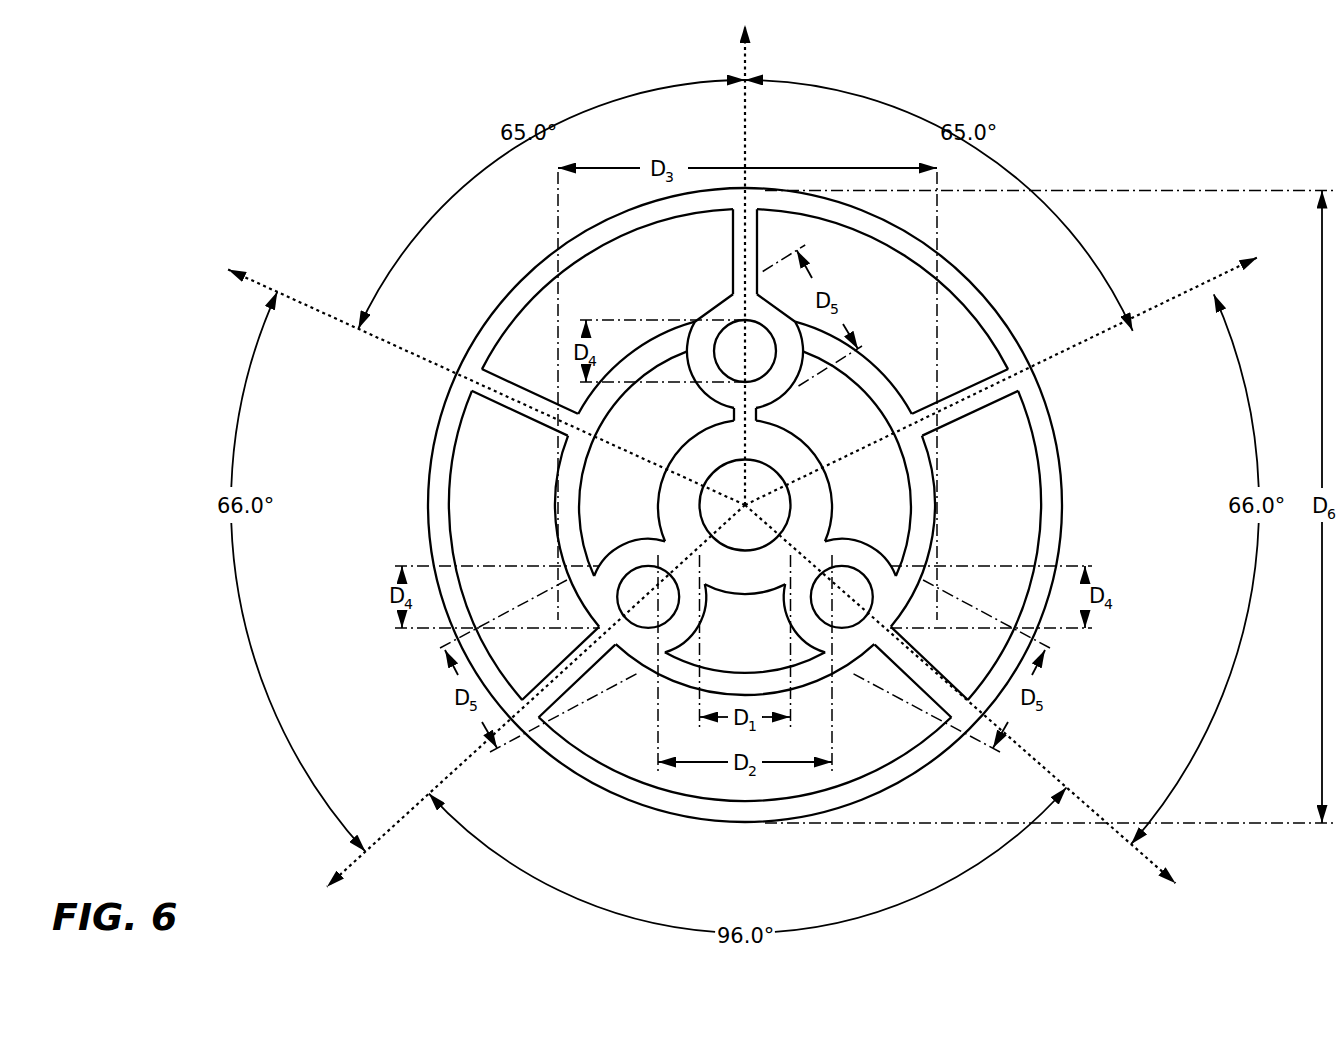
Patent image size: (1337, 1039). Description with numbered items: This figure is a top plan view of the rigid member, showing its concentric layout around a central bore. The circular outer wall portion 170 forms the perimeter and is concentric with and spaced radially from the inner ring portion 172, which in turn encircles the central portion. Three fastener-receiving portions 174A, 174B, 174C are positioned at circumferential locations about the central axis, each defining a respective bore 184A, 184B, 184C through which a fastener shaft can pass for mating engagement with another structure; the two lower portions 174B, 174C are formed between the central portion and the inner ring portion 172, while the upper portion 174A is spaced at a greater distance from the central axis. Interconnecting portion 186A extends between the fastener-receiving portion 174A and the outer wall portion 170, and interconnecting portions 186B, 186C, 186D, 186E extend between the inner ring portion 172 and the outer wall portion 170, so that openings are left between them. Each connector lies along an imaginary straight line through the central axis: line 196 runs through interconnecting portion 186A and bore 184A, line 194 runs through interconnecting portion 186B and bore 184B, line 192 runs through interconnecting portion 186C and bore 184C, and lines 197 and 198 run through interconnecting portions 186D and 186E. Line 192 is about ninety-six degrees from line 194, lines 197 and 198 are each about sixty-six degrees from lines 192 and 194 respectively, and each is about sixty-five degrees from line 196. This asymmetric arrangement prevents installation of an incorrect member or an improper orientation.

The outer wall portion 170 is at (952, 275).
The inner ring portion 172 is at (557, 509).
The fastener-receiving portion 174A is at (730, 316).
The fastener-receiving portion 174B is at (640, 570).
The fastener-receiving portion 174C is at (850, 570).
The bore 184A is at (704, 385).
The bore 184B is at (660, 538).
The bore 184C is at (830, 538).
The interconnecting portion 186A is at (740, 274).
The interconnecting portion 186B is at (538, 683).
The interconnecting portion 186C is at (952, 683).
The interconnecting portion 186D is at (962, 415).
The interconnecting portion 186E is at (524, 417).
The imaginary straight line 192 is at (1118, 835).
The imaginary straight line 194 is at (392, 832).
The imaginary straight line 196 is at (748, 118).
The imaginary straight line 197 is at (1190, 290).
The imaginary straight line 198 is at (420, 358).